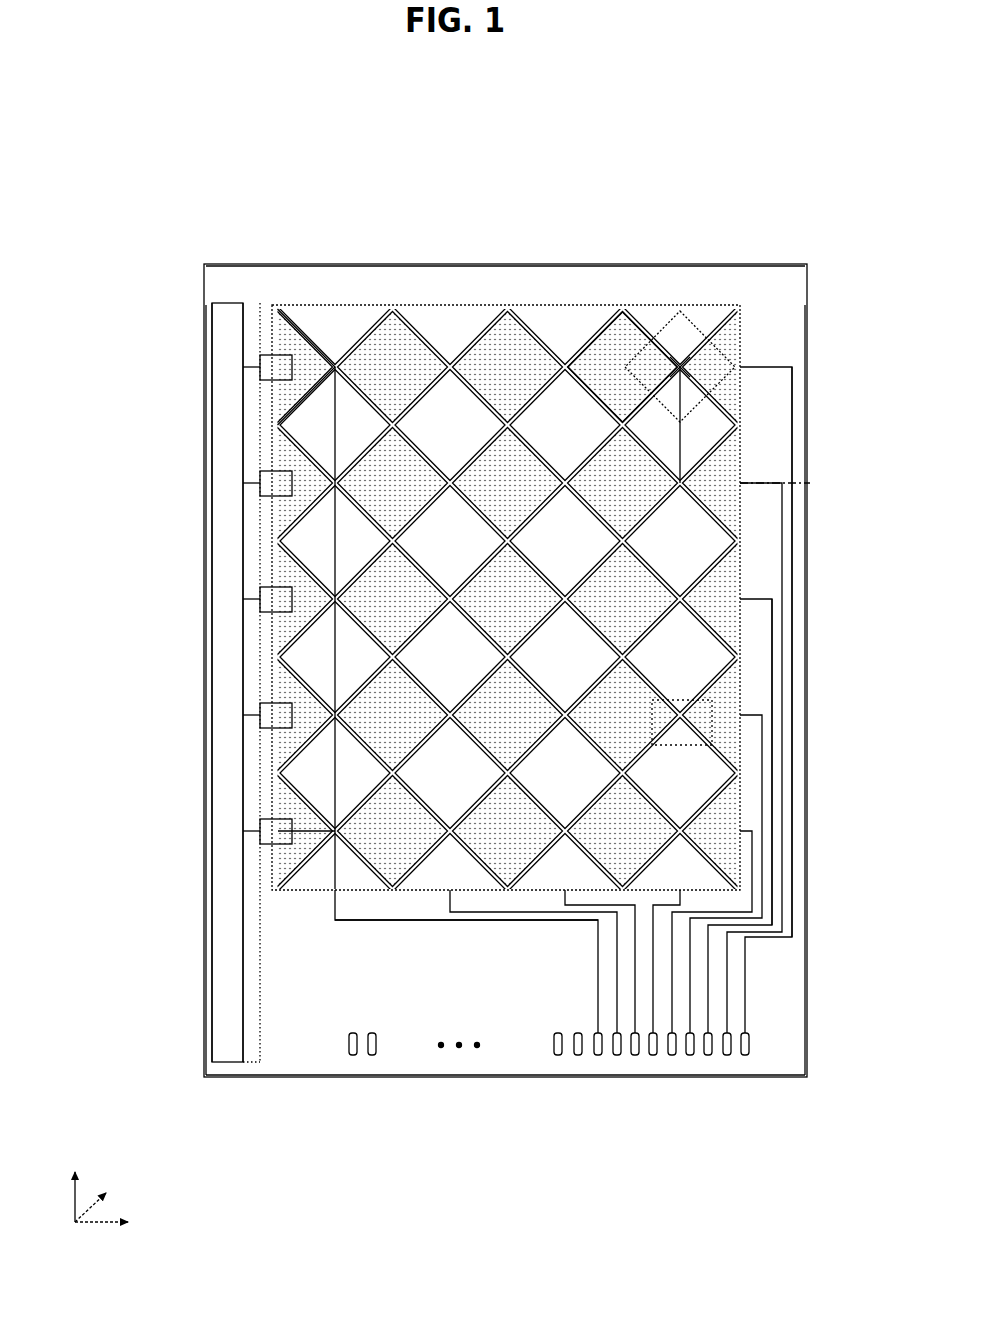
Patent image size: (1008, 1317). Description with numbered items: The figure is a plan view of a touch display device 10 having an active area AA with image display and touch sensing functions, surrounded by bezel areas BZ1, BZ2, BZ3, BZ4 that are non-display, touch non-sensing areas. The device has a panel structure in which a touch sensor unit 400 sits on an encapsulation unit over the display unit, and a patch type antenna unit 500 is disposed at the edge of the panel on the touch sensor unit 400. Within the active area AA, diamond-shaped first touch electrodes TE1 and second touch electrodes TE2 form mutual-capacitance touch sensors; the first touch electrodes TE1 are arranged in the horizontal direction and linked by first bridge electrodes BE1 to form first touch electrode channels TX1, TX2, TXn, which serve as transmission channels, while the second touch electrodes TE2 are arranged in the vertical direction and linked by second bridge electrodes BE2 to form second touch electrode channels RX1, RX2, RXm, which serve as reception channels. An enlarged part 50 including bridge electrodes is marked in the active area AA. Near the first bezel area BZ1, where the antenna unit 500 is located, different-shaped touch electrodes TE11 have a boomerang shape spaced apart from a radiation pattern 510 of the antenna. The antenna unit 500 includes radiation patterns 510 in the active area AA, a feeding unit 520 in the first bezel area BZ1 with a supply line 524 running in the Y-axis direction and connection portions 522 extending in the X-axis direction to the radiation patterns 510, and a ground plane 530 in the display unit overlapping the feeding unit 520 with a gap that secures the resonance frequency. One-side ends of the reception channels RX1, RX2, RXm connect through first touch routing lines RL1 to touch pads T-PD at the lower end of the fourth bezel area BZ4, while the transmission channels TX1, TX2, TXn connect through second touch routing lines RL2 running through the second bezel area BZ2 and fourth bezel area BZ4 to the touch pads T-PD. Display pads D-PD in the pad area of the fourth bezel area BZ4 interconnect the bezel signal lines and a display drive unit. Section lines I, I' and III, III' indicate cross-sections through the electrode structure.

The touch display device 10 is at (165, 139).
The touch sensor unit 400 is at (790, 1078).
The antenna unit 500 is at (93, 345).
The radiation pattern 510 is at (262, 350).
The feeding unit 520 is at (150, 443).
The connection portion 522 is at (262, 487).
The supply line 524 is at (226, 441).
The ground plane 530 is at (243, 393).
The first bezel area BZ1 is at (214, 672).
The second bezel area BZ2 is at (808, 582).
The third bezel area BZ3 is at (524, 282).
The fourth bezel area BZ4 is at (792, 1003).
The active area AA is at (740, 410).
The different-shaped touch electrode TE11 is at (277, 305).
The first touch electrode TE1 is at (626, 306).
The second touch electrode TE2 is at (630, 306).
The first bridge electrode BE1 is at (677, 352).
The second bridge electrode BE2 is at (681, 362).
The second touch electrode channel RX1 is at (345, 300).
The second touch electrode channel RX2 is at (463, 300).
The second touch electrode channel RXm is at (676, 300).
The first touch electrode channel TX1 is at (752, 344).
The first touch electrode channel TX2 is at (752, 464).
The first touch electrode channel TXn is at (752, 822).
The first touch routing line RL1 is at (516, 924).
The second touch routing line RL2 is at (775, 762).
The part including bridge electrodes 50 is at (690, 688).
The touch pad T-PD is at (728, 1089).
The display pad D-PD is at (583, 1089).
The section line I is at (247, 628).
The section line I' is at (308, 799).
The section line III is at (685, 425).
The section line III' is at (807, 485).